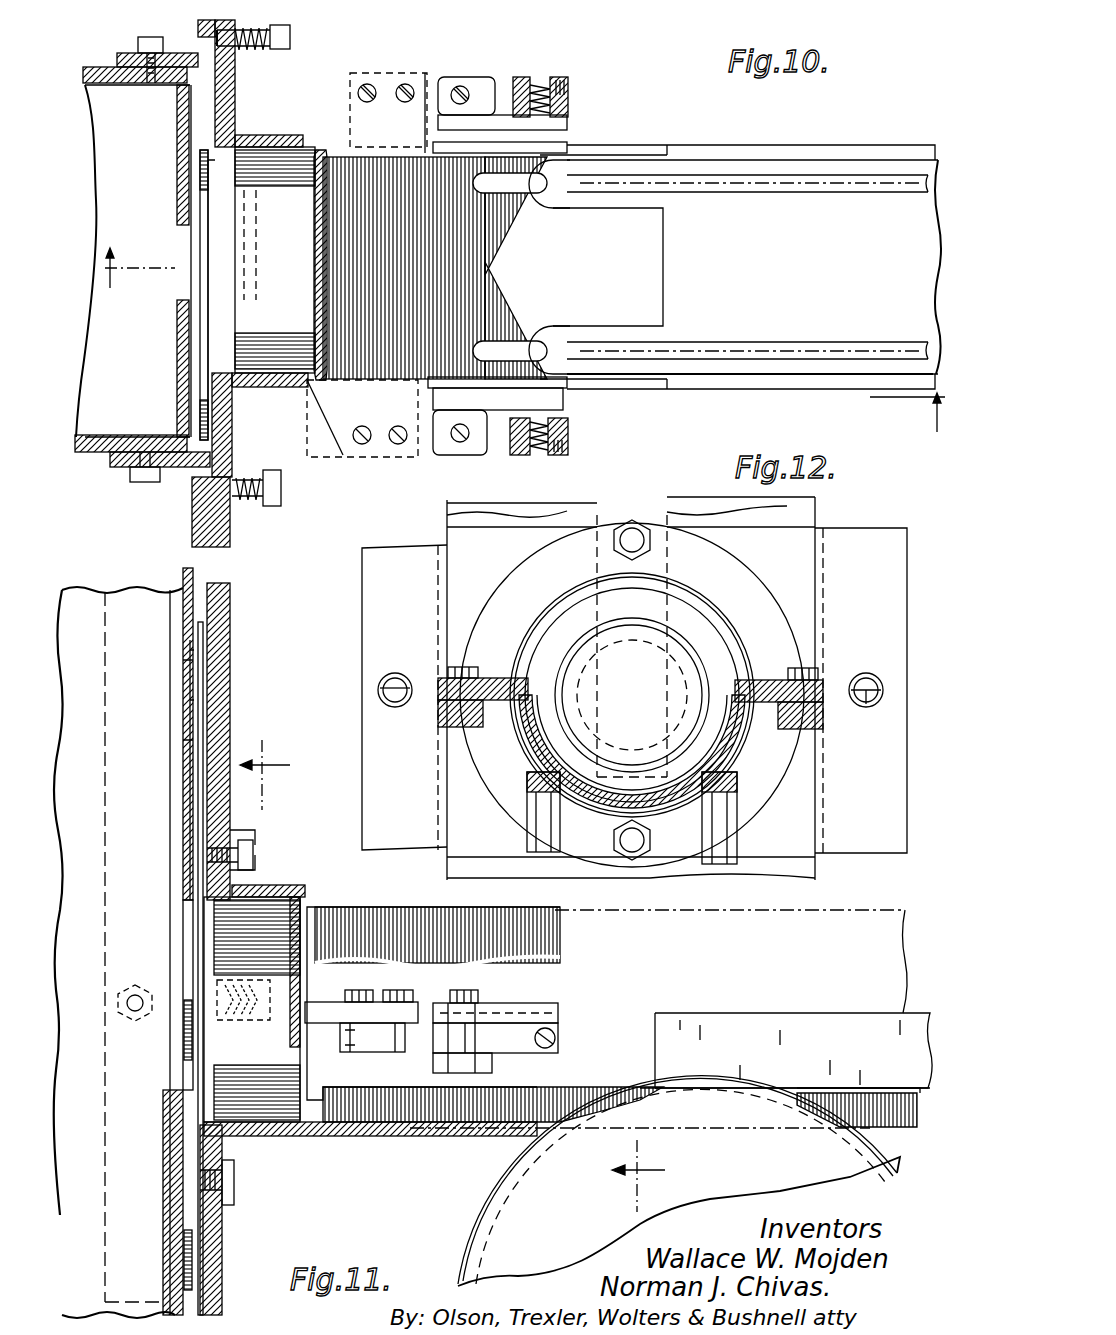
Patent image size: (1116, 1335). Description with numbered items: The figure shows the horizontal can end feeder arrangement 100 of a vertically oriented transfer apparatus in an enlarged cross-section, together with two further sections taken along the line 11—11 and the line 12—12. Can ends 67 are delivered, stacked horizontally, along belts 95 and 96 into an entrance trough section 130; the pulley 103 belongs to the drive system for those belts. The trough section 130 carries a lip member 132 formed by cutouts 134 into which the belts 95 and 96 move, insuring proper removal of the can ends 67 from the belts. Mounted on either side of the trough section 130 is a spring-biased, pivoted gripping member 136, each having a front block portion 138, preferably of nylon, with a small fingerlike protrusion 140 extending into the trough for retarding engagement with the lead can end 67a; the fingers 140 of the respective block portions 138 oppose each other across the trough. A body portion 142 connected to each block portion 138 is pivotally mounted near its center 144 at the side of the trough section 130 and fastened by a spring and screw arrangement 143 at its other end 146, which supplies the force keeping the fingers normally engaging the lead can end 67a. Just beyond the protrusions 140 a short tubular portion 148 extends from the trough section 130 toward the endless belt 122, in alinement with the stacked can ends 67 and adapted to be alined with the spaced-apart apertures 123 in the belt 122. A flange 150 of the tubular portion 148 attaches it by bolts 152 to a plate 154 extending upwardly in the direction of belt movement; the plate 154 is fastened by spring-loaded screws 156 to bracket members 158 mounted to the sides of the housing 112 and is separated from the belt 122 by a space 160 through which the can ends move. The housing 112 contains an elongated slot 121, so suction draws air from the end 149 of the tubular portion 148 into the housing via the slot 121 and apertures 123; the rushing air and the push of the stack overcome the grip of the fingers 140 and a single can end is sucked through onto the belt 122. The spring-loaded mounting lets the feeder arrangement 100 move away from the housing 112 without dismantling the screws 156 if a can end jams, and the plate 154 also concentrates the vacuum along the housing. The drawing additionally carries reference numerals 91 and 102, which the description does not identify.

In FIG. 10, the section line 11 is at (501, 347).
In FIG. 11, the section line 12 is at (467, 976).
In FIG. 10, the can ends 67 is at (248, 284).
In FIG. 11, the can ends 67 is at (215, 688).
In FIG. 10, the lead can end 67a is at (314, 244).
In FIG. 11, the lead can end 67a is at (320, 905).
In FIG. 10, the blade direction 91 is at (840, 145).
In FIG. 10, the belt 95 is at (870, 150).
In FIG. 12, the belt 95 is at (720, 815).
In FIG. 10, the belt 96 is at (858, 375).
In FIG. 12, the belt 96 is at (540, 790).
In FIG. 11, the belt 96 is at (880, 1105).
In FIG. 10, the feeder arrangement 100 is at (578, 92).
In FIG. 10, the blade 102 is at (750, 135).
In FIG. 11, the blade 102 is at (743, 999).
In FIG. 11, the pulley 103 is at (498, 1244).
In FIG. 10, the housing 112 is at (158, 176).
In FIG. 11, the housing 112 is at (138, 625).
In FIG. 10, the elongated slot 121 is at (188, 232).
In FIG. 12, the elongated slot 121 is at (632, 646).
In FIG. 11, the elongated slot 121 is at (182, 860).
In FIG. 10, the endless belt 122 is at (178, 138).
In FIG. 12, the endless belt 122 is at (790, 527).
In FIG. 11, the endless belt 122 is at (182, 900).
In FIG. 10, the spaced-apart apertures 123 is at (205, 283).
In FIG. 11, the spaced-apart apertures 123 is at (190, 752).
In FIG. 10, the entrance trough section 130 is at (570, 160).
In FIG. 11, the entrance trough section 130 is at (615, 1012).
In FIG. 10, the lip member 132 is at (645, 233).
In FIG. 11, the lip member 132 is at (655, 1047).
In FIG. 10, the cutouts 134 is at (640, 170).
In FIG. 10, the gripping member 136 is at (423, 80).
In FIG. 10, the front block portion 138 is at (350, 80).
In FIG. 12, the front block portion 138 is at (500, 678).
In FIG. 11, the front block portion 138 is at (400, 1002).
In FIG. 10, the fingerlike protrusion 140 is at (320, 150).
In FIG. 12, the fingerlike protrusion 140 is at (540, 660).
In FIG. 11, the fingerlike protrusion 140 is at (312, 1003).
In FIG. 10, the body portion 142 is at (515, 77).
In FIG. 11, the body portion 142 is at (425, 1043).
In FIG. 10, the spring and screw arrangement 143 is at (568, 100).
In FIG. 11, the spring and screw arrangement 143 is at (558, 1015).
In FIG. 10, the center 144 is at (462, 85).
In FIG. 11, the center 144 is at (480, 1003).
In FIG. 10, the other end 146 is at (570, 75).
In FIG. 10, the tubular portion 148 is at (292, 388).
In FIG. 12, the tubular portion 148 is at (720, 600).
In FIG. 11, the tubular portion 148 is at (290, 888).
In FIG. 10, the end 149 is at (324, 148).
In FIG. 11, the end 149 is at (300, 902).
In FIG. 12, the flange 150 is at (525, 580).
In FIG. 11, the flange 150 is at (250, 835).
In FIG. 12, the bolts 152 is at (660, 540).
In FIG. 11, the bolts 152 is at (255, 855).
In FIG. 10, the plate 154 is at (240, 538).
In FIG. 12, the plate 154 is at (880, 545).
In FIG. 11, the plate 154 is at (235, 738).
In FIG. 10, the spring-loaded screws 156 is at (240, 50).
In FIG. 12, the spring-loaded screws 156 is at (395, 707).
In FIG. 11, the spring-loaded screws 156 is at (260, 1020).
In FIG. 10, the bracket members 158 is at (140, 32).
In FIG. 10, the space 160 is at (215, 108).
In FIG. 11, the space 160 is at (215, 597).